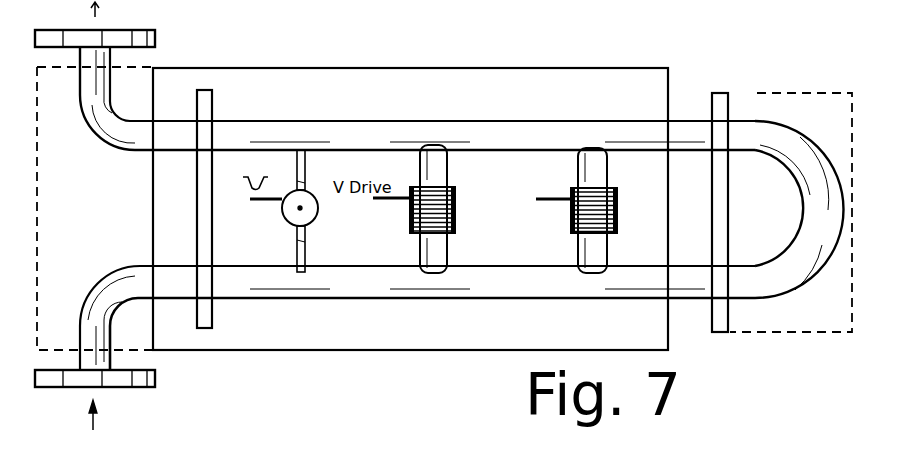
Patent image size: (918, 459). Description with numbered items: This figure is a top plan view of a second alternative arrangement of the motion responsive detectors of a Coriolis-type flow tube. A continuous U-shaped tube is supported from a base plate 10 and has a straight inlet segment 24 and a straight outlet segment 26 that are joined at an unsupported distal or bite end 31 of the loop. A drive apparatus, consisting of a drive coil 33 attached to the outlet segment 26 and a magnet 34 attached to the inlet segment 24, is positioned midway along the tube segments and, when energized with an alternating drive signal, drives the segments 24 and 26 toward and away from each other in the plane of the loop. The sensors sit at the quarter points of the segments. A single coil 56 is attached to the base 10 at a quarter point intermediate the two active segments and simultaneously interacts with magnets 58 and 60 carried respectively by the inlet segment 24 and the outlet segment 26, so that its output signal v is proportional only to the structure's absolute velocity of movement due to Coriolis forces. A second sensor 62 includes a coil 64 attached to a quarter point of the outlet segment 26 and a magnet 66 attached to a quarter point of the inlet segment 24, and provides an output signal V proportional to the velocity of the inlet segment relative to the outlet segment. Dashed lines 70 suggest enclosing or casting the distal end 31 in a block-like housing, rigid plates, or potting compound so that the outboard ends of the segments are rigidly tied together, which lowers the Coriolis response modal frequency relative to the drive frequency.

The base plate 10 is at (312, 351).
The inlet segment 24 is at (455, 283).
The outlet segment 26 is at (347, 121).
The distal end 31 is at (800, 145).
The drive coil 33 is at (457, 190).
The magnet 34 is at (448, 245).
The coil 56 is at (317, 211).
The magnet 58 is at (297, 240).
The magnet 60 is at (304, 184).
The second sensor 62 is at (583, 210).
The coil 64 is at (616, 188).
The magnet 66 is at (607, 255).
The dashed lines 70 is at (757, 93).